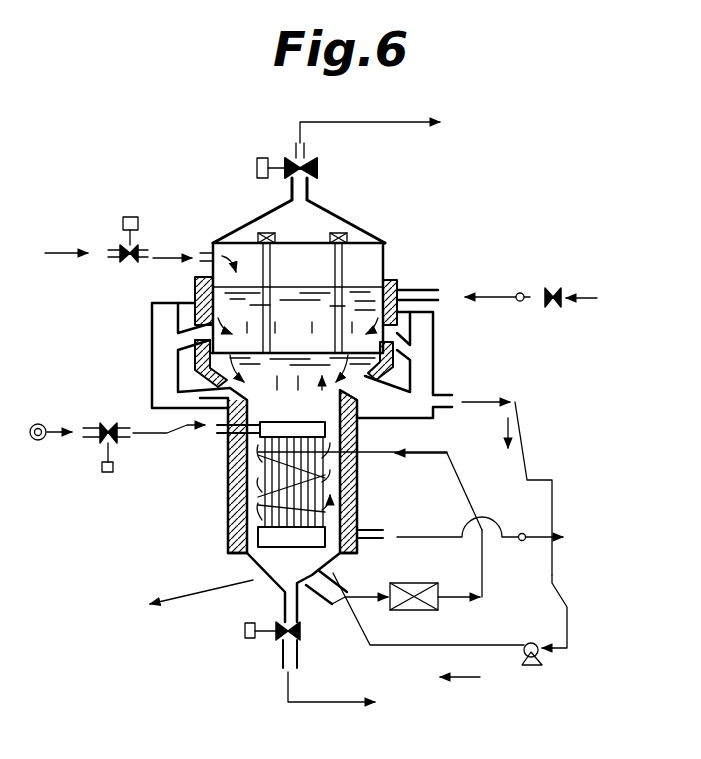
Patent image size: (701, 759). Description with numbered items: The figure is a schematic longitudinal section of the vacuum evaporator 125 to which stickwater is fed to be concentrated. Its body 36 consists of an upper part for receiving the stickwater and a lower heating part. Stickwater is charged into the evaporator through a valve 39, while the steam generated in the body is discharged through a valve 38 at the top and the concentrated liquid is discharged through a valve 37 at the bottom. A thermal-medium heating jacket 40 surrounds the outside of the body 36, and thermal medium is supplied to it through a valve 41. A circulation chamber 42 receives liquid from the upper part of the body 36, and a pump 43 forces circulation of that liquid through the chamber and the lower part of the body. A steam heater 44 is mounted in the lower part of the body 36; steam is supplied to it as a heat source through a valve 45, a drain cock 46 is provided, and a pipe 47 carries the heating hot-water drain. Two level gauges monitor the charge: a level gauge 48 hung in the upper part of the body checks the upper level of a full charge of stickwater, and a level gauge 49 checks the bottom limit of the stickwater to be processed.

The body 36 is at (384, 262).
The valve 37 is at (247, 638).
The valve 38 is at (257, 168).
The valve 39 is at (131, 217).
The thermal-medium heating jacket 40 is at (228, 462).
The valve 41 is at (553, 288).
The circulation chamber 42 is at (436, 354).
The pump 43 is at (537, 666).
The steam heater 44 is at (268, 560).
The valve 45 is at (107, 473).
The drain cock 46 is at (432, 583).
The pipe 47 is at (262, 482).
The level gauge 48 is at (276, 235).
The level gauge 49 is at (348, 240).
The vacuum evaporator 125 is at (378, 235).